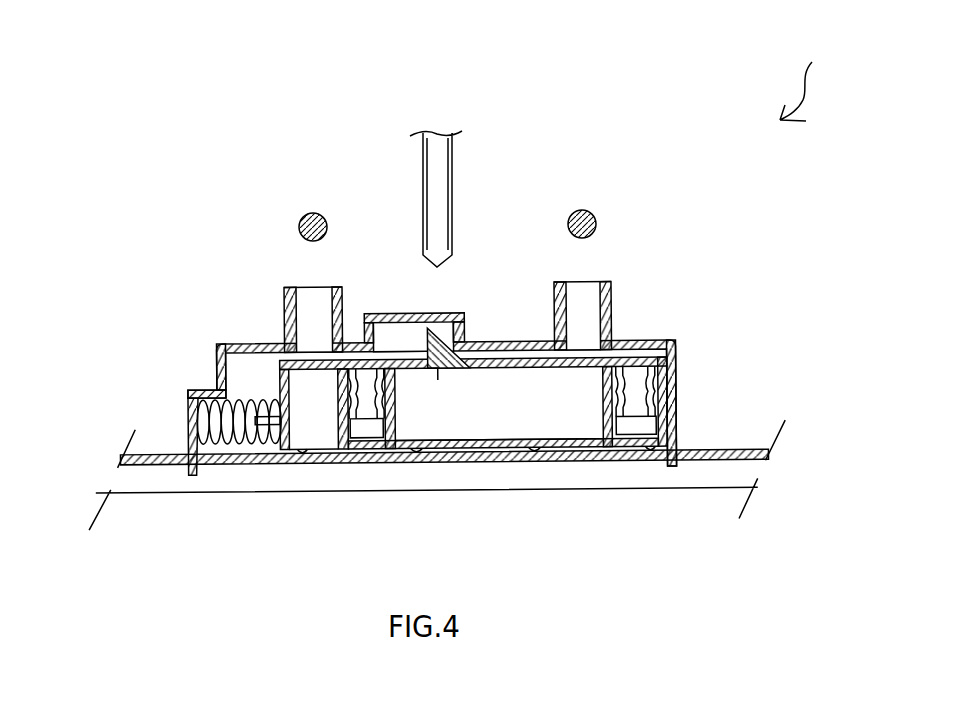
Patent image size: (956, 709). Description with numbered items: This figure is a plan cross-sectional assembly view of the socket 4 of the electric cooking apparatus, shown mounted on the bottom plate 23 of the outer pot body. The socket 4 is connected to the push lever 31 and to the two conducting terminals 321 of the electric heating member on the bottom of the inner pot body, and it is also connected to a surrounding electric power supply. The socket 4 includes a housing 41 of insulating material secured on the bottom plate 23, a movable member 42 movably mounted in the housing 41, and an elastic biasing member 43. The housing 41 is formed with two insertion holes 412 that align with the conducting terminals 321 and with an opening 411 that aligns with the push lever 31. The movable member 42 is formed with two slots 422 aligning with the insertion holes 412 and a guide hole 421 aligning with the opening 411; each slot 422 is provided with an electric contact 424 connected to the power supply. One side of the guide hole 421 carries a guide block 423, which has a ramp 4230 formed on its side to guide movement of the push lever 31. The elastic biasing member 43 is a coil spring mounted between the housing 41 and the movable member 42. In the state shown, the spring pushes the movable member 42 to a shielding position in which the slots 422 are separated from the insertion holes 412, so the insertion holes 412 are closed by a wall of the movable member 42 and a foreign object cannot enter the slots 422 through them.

The socket 4 is at (804, 73).
The bottom plate 23 is at (170, 458).
The push lever 31 is at (437, 147).
The conducting terminals 321 is at (313, 216).
The housing 41 is at (248, 342).
The opening 411 is at (427, 328).
The insertion holes 412 is at (585, 299).
The movable member 42 is at (583, 420).
The guide hole 421 is at (498, 362).
The slots 422 is at (652, 370).
The guide block 423 is at (438, 368).
The ramp 4230 is at (453, 333).
The electric contact 424 is at (380, 420).
The elastic biasing member 43 is at (222, 437).